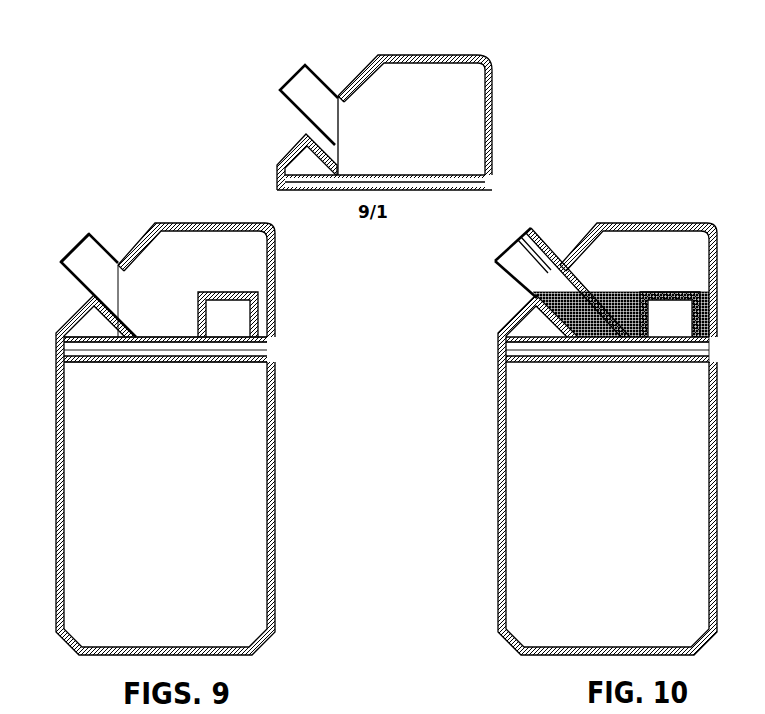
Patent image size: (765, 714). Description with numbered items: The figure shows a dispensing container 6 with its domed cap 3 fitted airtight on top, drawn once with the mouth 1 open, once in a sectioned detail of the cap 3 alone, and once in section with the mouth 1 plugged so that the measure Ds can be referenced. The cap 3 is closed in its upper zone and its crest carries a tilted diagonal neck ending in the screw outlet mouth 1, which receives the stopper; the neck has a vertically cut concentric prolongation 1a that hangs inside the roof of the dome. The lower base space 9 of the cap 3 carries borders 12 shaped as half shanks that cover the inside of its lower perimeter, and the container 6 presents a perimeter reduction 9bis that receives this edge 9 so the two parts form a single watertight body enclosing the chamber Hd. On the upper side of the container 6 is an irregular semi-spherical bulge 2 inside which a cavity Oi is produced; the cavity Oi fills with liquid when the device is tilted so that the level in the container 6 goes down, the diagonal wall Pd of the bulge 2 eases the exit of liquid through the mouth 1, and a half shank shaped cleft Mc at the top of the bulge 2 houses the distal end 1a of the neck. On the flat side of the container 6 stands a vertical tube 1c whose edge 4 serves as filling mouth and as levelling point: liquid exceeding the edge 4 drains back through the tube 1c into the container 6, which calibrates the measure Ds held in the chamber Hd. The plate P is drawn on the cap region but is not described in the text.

In FIG. 9, the mouth 1 is at (80, 252).
In FIG. 10, the mouth 1 is at (494, 259).
In FIG. 9, the distal end of the neck 1a is at (335, 146).
In FIG. 9, the tube 1c is at (227, 306).
In FIG. 10, the tube 1c is at (673, 298).
In FIG. 10, the bulge 2 is at (522, 280).
In FIG. 9, the cap 3 is at (272, 300).
In FIG. 10, the cap 3 is at (638, 280).
In FIG. 10, the edge of the tube 4 is at (645, 290).
In FIG. 9, the container 6 is at (275, 387).
In FIG. 10, the container 6 is at (502, 462).
In FIG. 9, the base space of the cap 9 is at (75, 362).
In FIG. 10, the base space of the cap 9 is at (540, 362).
In FIG. 9, the perimeter reduction 9bis is at (213, 364).
In FIG. 9, the borders 12 is at (245, 353).
In FIG. 9, the plate P is at (94, 260).
In FIG. 9, the chamber Hd is at (163, 313).
In FIG. 10, the chamber Hd is at (620, 292).
In FIG. 9, the cavity Oi is at (92, 318).
In FIG. 10, the cavity Oi is at (522, 330).
In FIG. 9, the diagonal wall Pd is at (88, 330).
In FIG. 10, the diagonal wall Pd is at (608, 312).
In FIG. 9, the cleft Mc is at (68, 350).
In FIG. 10, the cleft Mc is at (545, 270).
In FIG. 10, the measure Ds is at (714, 342).